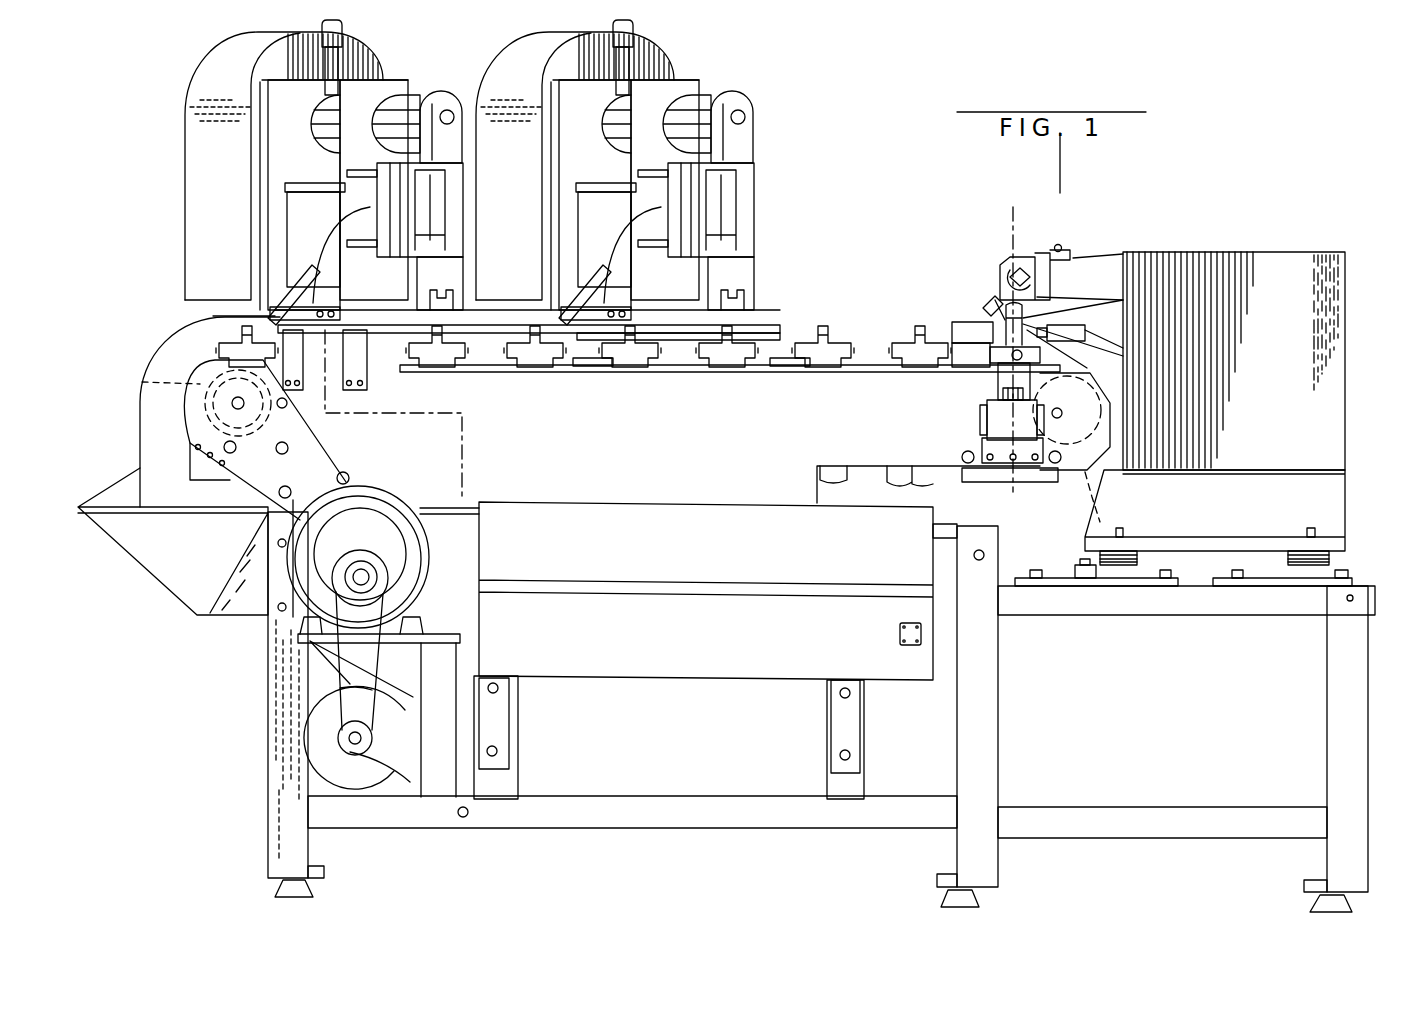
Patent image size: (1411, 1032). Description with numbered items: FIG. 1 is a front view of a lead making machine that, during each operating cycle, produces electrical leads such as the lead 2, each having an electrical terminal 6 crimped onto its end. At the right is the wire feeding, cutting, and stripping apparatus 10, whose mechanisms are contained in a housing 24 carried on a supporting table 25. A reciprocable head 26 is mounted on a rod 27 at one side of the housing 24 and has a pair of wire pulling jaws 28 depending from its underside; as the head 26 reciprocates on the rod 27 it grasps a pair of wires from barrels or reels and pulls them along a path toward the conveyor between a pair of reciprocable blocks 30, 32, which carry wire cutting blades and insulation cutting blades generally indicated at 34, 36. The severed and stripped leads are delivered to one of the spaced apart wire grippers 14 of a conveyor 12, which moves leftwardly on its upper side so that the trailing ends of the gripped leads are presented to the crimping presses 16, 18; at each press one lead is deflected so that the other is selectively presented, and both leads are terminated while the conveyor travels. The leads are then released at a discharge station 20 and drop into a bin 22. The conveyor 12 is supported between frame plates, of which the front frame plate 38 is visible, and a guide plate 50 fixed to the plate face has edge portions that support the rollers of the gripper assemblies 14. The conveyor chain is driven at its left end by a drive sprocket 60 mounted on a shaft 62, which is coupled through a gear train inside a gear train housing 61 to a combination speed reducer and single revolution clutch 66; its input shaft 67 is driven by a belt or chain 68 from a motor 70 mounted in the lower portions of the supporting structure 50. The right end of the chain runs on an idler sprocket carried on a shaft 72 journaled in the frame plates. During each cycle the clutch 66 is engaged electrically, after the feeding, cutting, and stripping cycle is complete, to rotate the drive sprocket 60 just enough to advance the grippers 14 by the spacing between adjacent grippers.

The electrical lead 2 is at (323, 287).
The electrical terminal 6 is at (1013, 207).
The apparatus 10 is at (1251, 216).
The conveyor 12 is at (801, 336).
The wire grippers 14 is at (535, 360).
The crimping press 16 is at (714, 84).
The crimping press 18 is at (186, 103).
The discharge station 20 is at (150, 332).
The bin 22 is at (128, 508).
The housing 24 is at (1325, 330).
The supporting table 25 is at (1364, 585).
The reciprocable head 26 is at (1011, 257).
The rod 27 is at (1015, 277).
The wire pulling jaws 28 is at (1007, 393).
The reciprocable block 30 is at (963, 328).
The reciprocable block 32 is at (1068, 334).
The wire cutting and insulation cutting blades 34 is at (995, 313).
The wire cutting and insulation cutting blades 36 is at (1043, 338).
The front frame plate 38 is at (648, 443).
The guide plate 50 is at (268, 662).
The drive sprocket 60 is at (155, 382).
The gear train housing 61 is at (330, 447).
The shaft 62 is at (242, 405).
The combination speed reducer and single revolution clutch 66 is at (402, 492).
The input shaft 67 is at (350, 584).
The belt or chain 68 is at (345, 690).
The motor 70 is at (312, 751).
The shaft 72 is at (1063, 410).